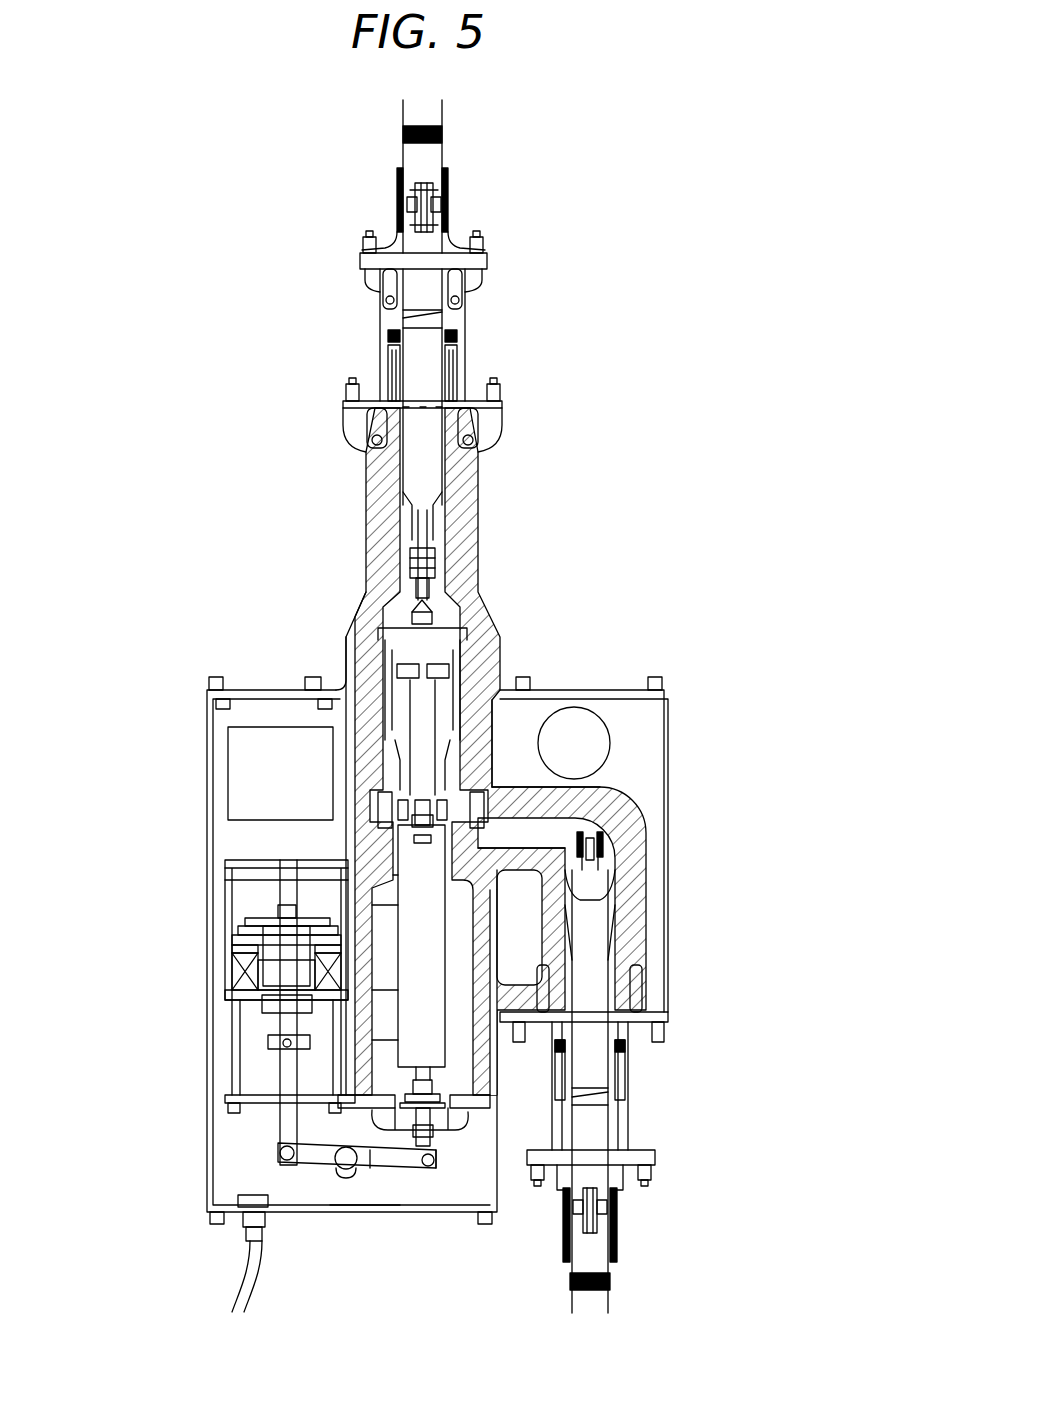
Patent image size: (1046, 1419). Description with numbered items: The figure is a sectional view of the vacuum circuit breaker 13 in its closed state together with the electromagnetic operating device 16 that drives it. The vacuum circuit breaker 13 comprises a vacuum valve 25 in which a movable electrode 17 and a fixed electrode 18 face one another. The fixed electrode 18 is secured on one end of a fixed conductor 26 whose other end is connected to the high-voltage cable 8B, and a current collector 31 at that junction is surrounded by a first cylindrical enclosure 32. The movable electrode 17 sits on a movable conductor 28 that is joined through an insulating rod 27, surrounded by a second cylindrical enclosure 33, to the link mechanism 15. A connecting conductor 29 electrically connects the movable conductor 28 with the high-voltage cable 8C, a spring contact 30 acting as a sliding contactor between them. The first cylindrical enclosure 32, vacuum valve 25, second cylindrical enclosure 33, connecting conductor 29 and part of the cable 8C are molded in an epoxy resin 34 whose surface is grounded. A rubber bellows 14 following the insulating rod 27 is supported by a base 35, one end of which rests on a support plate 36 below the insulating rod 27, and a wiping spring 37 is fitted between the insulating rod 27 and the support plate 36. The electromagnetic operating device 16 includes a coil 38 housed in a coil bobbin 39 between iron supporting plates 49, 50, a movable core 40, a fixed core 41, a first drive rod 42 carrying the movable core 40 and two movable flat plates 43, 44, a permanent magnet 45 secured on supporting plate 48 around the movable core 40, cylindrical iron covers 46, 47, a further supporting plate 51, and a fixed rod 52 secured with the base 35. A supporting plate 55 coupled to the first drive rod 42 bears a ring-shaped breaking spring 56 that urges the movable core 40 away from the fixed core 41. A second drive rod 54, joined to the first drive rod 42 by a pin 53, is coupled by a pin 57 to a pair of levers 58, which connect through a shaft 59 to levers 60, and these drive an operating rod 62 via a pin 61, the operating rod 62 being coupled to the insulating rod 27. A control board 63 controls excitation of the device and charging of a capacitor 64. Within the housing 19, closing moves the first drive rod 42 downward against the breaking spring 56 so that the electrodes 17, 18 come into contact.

The high-voltage cable 8B is at (428, 250).
The high-voltage cable 8C is at (597, 1305).
The vacuum circuit breaker 13 is at (465, 652).
The rubber bellows 14 is at (372, 1170).
The link mechanism 15 is at (362, 1215).
The electromagnetic operating device 16 is at (225, 900).
The movable electrode 17 is at (470, 676).
The fixed electrode 18 is at (462, 640).
The housing 19 is at (207, 770).
The vacuum valve 25 is at (470, 660).
The fixed conductor 26 is at (448, 622).
The insulating rod 27 is at (430, 910).
The movable conductor 28 is at (455, 745).
The connecting conductor 29 is at (536, 838).
The spring contact 30 is at (550, 830).
The current collector 31 is at (440, 556).
The first cylindrical enclosure 32 is at (388, 520).
The second cylindrical enclosure 33 is at (600, 950).
The epoxy resin 34 is at (505, 725).
The base 35 is at (390, 1094).
The support plate 36 is at (438, 1142).
The wiping spring 37 is at (458, 1120).
The coil 38 is at (235, 985).
The coil bobbin 39 is at (235, 975).
The movable core 40 is at (240, 957).
The fixed core 41 is at (245, 1008).
The first drive rod 42 is at (288, 945).
The movable flat plate 43 is at (262, 918).
The movable flat plate 44 is at (245, 926).
The permanent magnet 45 is at (240, 940).
The iron cover 46 is at (230, 1000).
The iron cover 47 is at (225, 870).
The iron supporting plate 48 is at (355, 922).
The iron supporting plate 49 is at (355, 944).
The iron supporting plate 50 is at (355, 967).
The iron supporting plate 51 is at (355, 989).
The fixed rod 52 is at (273, 1118).
The pin 53 is at (240, 1075).
The second drive rod 54 is at (280, 1133).
The supporting plate 55 is at (240, 1050).
The breaking spring 56 is at (233, 1087).
The pin 57 is at (265, 1160).
The lever 58 is at (318, 1212).
The shaft 59 is at (345, 1178).
The lever 60 is at (395, 1170).
The pin 61 is at (418, 1170).
The operating rod 62 is at (433, 1168).
The control board 63 is at (253, 727).
The capacitor 64 is at (600, 738).